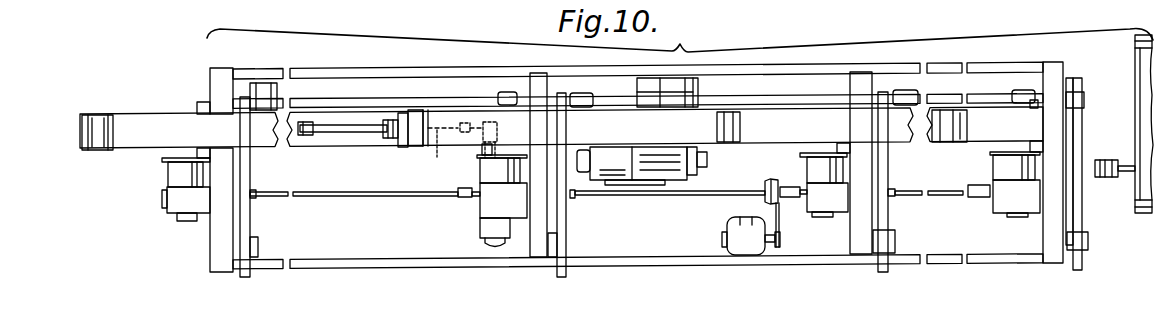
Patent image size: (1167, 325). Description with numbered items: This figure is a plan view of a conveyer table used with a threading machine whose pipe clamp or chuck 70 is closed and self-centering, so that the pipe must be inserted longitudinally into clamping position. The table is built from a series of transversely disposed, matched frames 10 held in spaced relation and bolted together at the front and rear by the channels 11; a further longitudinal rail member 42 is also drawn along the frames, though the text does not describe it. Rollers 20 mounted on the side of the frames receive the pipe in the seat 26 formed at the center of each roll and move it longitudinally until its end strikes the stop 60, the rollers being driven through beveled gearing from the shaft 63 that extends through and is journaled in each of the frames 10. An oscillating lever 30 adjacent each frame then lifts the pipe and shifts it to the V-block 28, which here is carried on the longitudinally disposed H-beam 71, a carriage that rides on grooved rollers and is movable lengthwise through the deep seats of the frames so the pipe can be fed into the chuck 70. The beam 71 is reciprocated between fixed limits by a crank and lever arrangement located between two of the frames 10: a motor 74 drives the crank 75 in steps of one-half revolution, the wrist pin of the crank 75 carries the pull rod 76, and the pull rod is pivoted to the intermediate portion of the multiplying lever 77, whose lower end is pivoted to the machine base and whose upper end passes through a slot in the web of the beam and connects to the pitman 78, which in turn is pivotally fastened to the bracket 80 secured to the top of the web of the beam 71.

The frames 10 is at (220, 87).
The channels 11 is at (327, 68).
The rollers 20 is at (185, 171).
The seat 26 is at (190, 178).
The V-block 28 is at (98, 116).
The oscillating lever 30 is at (286, 175).
The upper guide rail 42 is at (411, 100).
The stop 60 is at (1107, 161).
The shaft 63 is at (305, 196).
The pipe clamp or chuck 70 is at (1145, 177).
The H-beam 71 is at (152, 114).
The motor 74 is at (488, 232).
The crank 75 is at (497, 130).
The pull rod 76 is at (437, 150).
The multiplying lever 77 is at (306, 137).
The pitman 78 is at (332, 128).
The bracket 80 is at (392, 128).